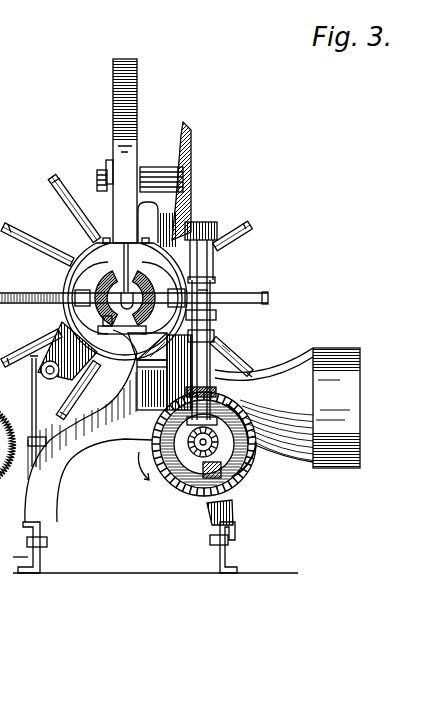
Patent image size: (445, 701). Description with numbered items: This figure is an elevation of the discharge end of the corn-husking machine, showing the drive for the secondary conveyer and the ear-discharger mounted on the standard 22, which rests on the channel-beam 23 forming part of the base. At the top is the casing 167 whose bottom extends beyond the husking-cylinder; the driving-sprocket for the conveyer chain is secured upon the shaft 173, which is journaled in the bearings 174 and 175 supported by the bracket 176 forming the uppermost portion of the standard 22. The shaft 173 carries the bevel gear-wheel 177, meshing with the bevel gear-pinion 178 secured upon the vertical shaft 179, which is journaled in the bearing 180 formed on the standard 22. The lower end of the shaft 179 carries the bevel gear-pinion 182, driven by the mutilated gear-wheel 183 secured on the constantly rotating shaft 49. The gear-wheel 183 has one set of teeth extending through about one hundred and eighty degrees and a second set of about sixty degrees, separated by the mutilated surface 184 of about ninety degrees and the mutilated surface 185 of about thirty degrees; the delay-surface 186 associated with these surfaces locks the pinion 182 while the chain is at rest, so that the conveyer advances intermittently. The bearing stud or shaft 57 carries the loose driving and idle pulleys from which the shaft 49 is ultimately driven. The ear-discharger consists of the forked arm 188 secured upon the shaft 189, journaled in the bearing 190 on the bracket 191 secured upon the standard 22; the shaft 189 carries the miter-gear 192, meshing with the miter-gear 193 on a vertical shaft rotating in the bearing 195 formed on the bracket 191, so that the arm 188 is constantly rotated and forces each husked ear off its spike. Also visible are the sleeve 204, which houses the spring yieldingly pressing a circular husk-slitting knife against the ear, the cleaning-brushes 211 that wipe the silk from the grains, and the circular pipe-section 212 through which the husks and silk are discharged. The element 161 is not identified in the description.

The casing 167 is at (138, 108).
The bearing 174 is at (109, 164).
The shaft 173 is at (98, 178).
The bearing 175 is at (157, 167).
The bevel gear-wheel 177 is at (194, 148).
The bracket 176 is at (163, 214).
The bevel gear-pinion 178 is at (218, 226).
The sleeve 204 is at (33, 249).
The cleaning-brushes 211 is at (140, 272).
The bearing 180 is at (211, 271).
The vertical shaft 179 is at (209, 291).
The bearing stud or shaft 57 is at (66, 312).
The forked arm 188 is at (110, 324).
The shaft 189 is at (119, 335).
The bearing 190 is at (144, 336).
The bracket 191 is at (152, 385).
The miter-gear 192 is at (216, 318).
The miter-gear 193 is at (221, 340).
The rod 161 is at (231, 348).
The bearing 195 is at (252, 367).
The bevel gear-pinion 182 is at (244, 388).
The circular pipe-section 212 is at (336, 408).
The delay-surface 186 is at (233, 413).
The mutilated surface 184 is at (256, 420).
The shaft 49 is at (191, 442).
The standard 22 is at (53, 494).
The mutilated gear-wheel 183 is at (170, 481).
The mutilated surface 185 is at (205, 497).
The channel-beam 23 is at (225, 566).